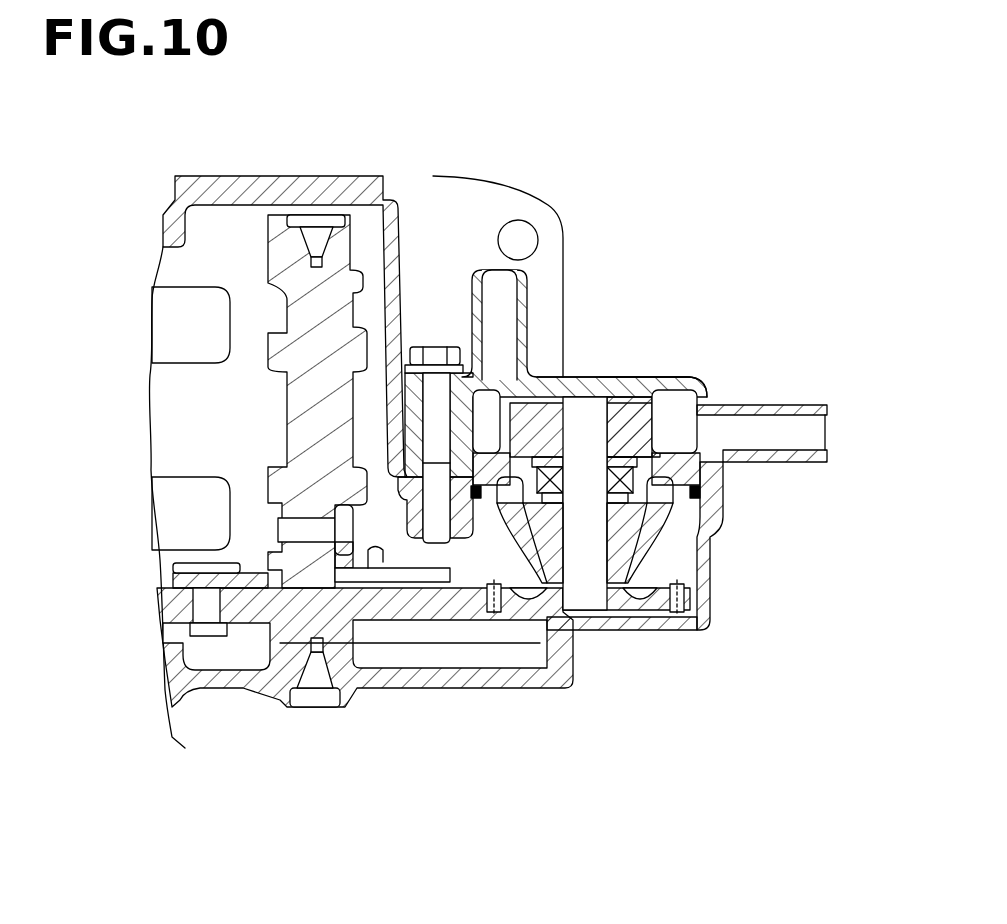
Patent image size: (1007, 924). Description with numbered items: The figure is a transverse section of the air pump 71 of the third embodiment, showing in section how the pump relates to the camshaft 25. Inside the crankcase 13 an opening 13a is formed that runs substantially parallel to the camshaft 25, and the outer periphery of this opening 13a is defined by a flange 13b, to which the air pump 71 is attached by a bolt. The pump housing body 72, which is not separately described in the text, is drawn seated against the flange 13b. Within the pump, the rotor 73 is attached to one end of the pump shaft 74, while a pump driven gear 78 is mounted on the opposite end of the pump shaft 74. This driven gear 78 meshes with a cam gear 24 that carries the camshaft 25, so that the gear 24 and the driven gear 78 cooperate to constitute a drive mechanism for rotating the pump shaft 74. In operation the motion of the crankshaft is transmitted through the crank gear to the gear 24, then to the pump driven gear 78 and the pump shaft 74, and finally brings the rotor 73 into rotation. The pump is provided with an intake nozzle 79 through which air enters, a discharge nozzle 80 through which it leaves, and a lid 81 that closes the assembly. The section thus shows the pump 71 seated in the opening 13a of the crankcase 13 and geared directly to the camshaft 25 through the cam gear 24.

The crankcase 13 is at (227, 250).
The opening 13a is at (480, 505).
The flange 13b is at (483, 487).
The cam gear 24 is at (412, 625).
The camshaft 25 is at (394, 297).
The air pump 71 is at (660, 393).
The pump flange 72 is at (527, 300).
The rotor 73 is at (707, 390).
The pump shaft 74 is at (658, 541).
The pump driven gear 78 is at (685, 597).
The intake nozzle 79 is at (458, 515).
The discharge nozzle 80 is at (797, 405).
The lid 81 is at (647, 377).